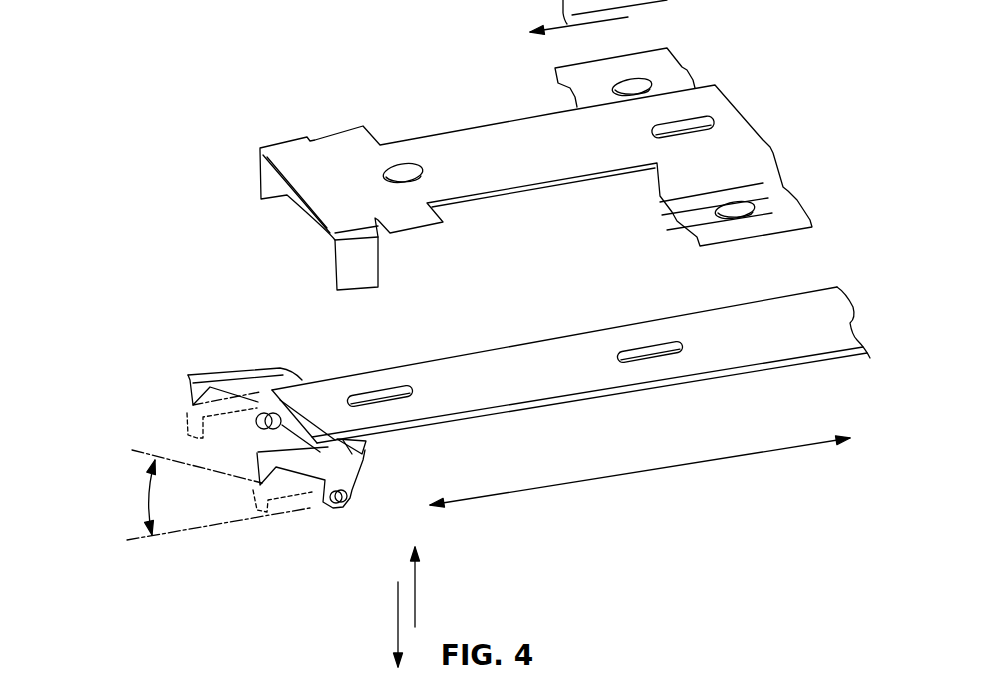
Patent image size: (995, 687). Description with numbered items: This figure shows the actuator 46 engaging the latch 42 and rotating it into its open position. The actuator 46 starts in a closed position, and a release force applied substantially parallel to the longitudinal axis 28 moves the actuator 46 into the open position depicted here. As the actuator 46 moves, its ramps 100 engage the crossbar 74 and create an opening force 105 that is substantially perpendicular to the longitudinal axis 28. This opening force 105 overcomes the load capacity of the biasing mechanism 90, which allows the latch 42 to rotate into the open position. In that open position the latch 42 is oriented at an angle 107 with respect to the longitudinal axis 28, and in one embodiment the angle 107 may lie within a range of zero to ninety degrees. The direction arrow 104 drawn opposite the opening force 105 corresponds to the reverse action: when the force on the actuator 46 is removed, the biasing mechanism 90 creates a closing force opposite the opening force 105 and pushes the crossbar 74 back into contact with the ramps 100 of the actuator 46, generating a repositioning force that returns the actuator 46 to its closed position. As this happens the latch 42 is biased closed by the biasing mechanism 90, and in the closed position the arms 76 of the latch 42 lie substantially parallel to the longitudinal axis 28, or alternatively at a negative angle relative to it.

The longitudinal axis 28 is at (767, 452).
The latch 42 is at (305, 468).
The actuator 46 is at (716, 357).
The crossbar 74 is at (362, 441).
The arms 76 is at (233, 380).
The biasing mechanism 90 is at (353, 477).
The ramps 100 is at (262, 402).
The downward direction arrow 104 is at (397, 618).
The opening force 105 is at (418, 604).
The angle 107 is at (150, 498).